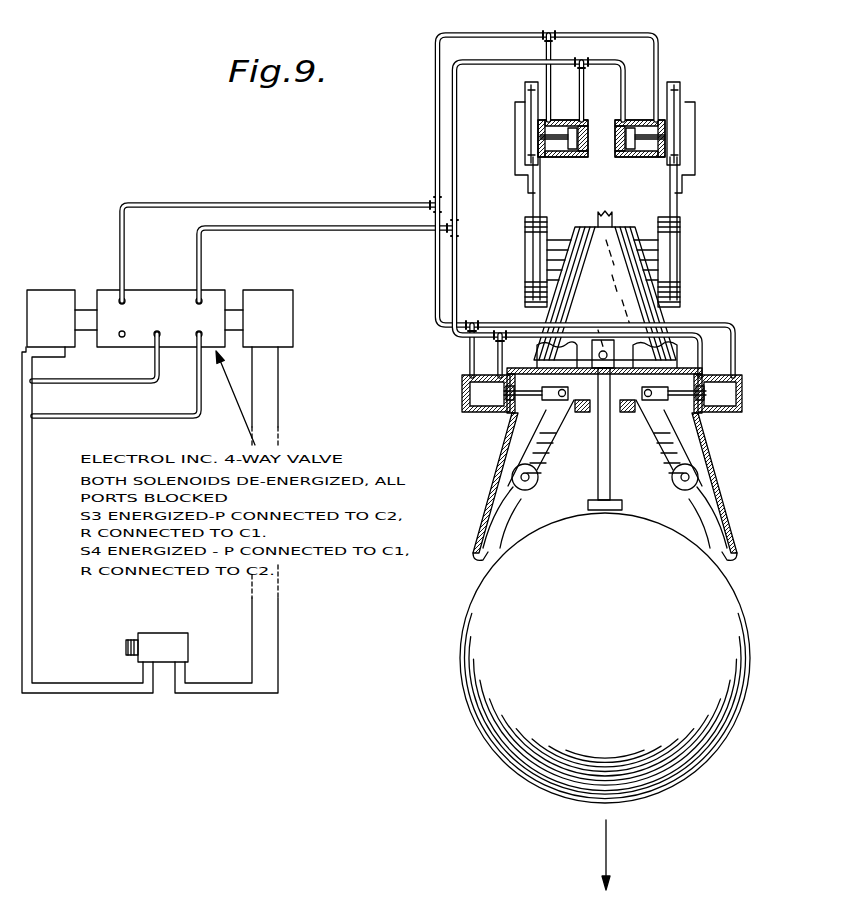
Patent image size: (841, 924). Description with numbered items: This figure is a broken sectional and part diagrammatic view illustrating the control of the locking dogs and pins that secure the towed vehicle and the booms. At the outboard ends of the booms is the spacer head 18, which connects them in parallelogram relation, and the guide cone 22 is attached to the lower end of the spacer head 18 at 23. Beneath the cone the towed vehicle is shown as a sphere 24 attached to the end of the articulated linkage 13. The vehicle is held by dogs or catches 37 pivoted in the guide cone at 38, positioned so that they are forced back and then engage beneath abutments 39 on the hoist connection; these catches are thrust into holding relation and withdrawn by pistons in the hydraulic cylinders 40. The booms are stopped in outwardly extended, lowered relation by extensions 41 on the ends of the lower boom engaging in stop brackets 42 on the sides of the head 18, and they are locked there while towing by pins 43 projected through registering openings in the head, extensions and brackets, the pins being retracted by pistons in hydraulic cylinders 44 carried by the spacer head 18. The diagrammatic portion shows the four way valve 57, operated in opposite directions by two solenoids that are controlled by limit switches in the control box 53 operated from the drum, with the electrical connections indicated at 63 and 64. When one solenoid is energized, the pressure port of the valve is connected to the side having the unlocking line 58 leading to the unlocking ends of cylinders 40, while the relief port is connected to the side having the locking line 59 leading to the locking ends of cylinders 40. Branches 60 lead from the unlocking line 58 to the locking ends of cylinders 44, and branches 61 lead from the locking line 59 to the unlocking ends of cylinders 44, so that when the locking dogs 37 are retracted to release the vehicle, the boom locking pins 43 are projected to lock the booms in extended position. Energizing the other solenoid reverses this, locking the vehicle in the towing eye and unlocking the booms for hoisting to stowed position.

The articulated linkage 13 is at (606, 212).
The spacer head 18 is at (535, 82).
The guide cone 22 is at (672, 305).
The attachment of guide cone 23 is at (526, 280).
The sphere 24 is at (620, 626).
The dogs or catches 37 is at (638, 406).
The pivot of dogs 38 is at (530, 477).
The abutments 39 is at (604, 377).
The hydraulic cylinders 40 is at (462, 397).
The extensions 41 is at (525, 90).
The stop brackets 42 is at (515, 165).
The pins 43 is at (555, 150).
The hydraulic cylinders 44 is at (588, 152).
The control box 53 is at (162, 640).
The four way valve 57 is at (170, 266).
The unlocking line 58 is at (393, 233).
The locking line 59 is at (386, 204).
The branches 60 is at (622, 85).
The branches 61 is at (660, 62).
The electrical connections 63 is at (25, 630).
The electrical connections 64 is at (253, 377).